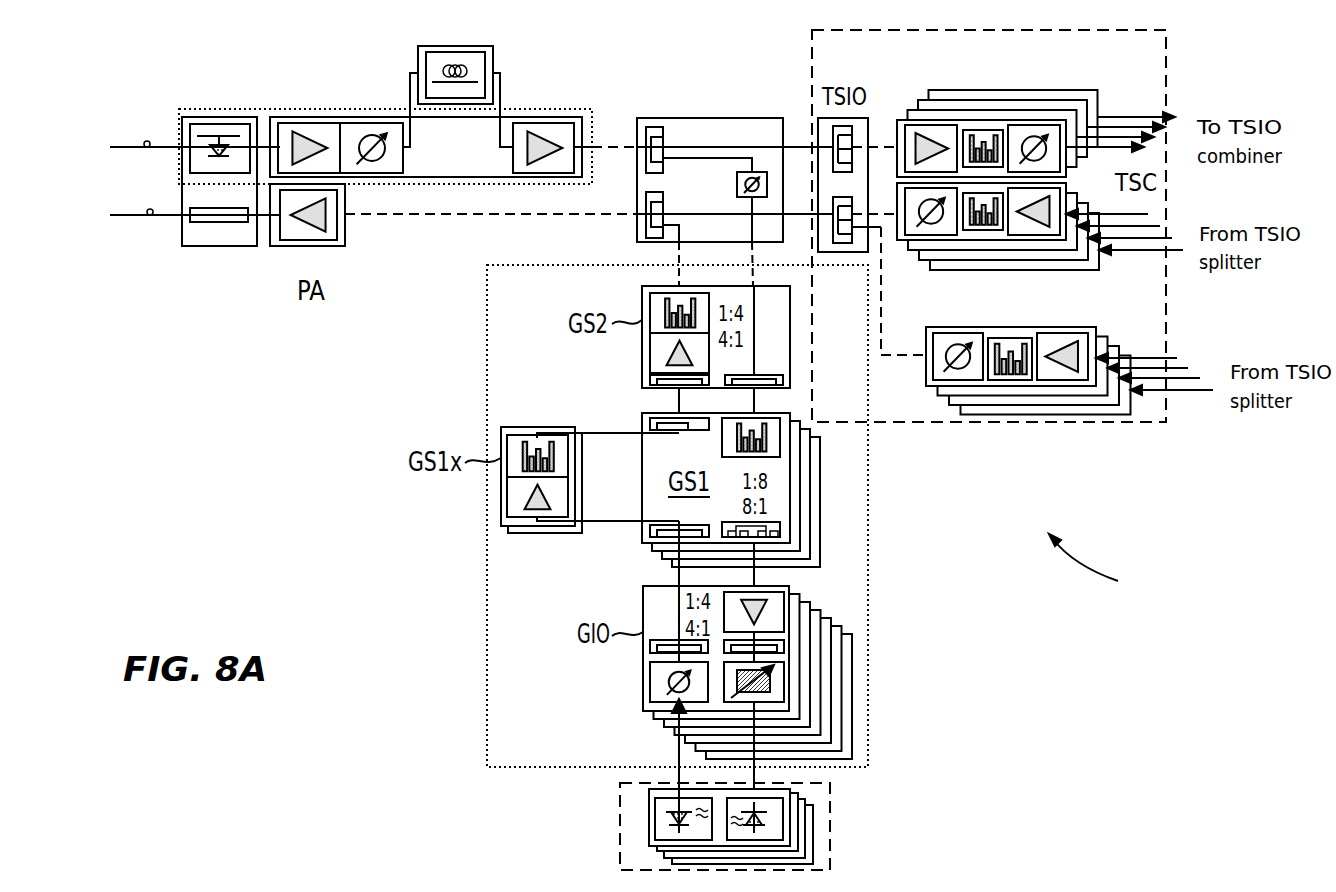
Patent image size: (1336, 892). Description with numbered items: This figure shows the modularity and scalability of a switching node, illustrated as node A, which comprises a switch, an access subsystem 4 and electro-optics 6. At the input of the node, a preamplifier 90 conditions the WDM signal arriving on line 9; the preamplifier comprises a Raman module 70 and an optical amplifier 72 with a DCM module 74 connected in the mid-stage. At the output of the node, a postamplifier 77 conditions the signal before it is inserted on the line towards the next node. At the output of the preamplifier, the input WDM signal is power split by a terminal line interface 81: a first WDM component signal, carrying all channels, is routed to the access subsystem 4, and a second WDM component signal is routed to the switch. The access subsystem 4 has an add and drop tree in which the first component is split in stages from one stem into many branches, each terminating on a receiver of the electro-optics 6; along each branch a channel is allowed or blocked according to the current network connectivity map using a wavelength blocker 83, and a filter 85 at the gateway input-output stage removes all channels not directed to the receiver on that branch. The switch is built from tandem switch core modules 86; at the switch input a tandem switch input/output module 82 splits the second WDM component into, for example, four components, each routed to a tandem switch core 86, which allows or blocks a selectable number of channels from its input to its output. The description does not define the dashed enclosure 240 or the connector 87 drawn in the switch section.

The line 9 is at (134, 145).
The Raman module 70 is at (222, 117).
The preamplifier 90 is at (310, 117).
The DCM module 74 is at (418, 60).
The optical amplifier 72 is at (580, 109).
The postamplifier 77 is at (345, 237).
The terminal line interface 81 is at (712, 118).
The tandem switch input/output module 82 is at (852, 128).
The TSIO input connector 87 is at (841, 252).
The tandem switch core module 86 is at (947, 120).
The wavelength blocker 83 is at (780, 443).
The access subsystem 4 is at (868, 518).
The filter 85 is at (770, 682).
The electro-optics 6 is at (832, 816).
The TSIO combiner/splitter assembly 240 is at (1143, 422).
The node A is at (1096, 566).